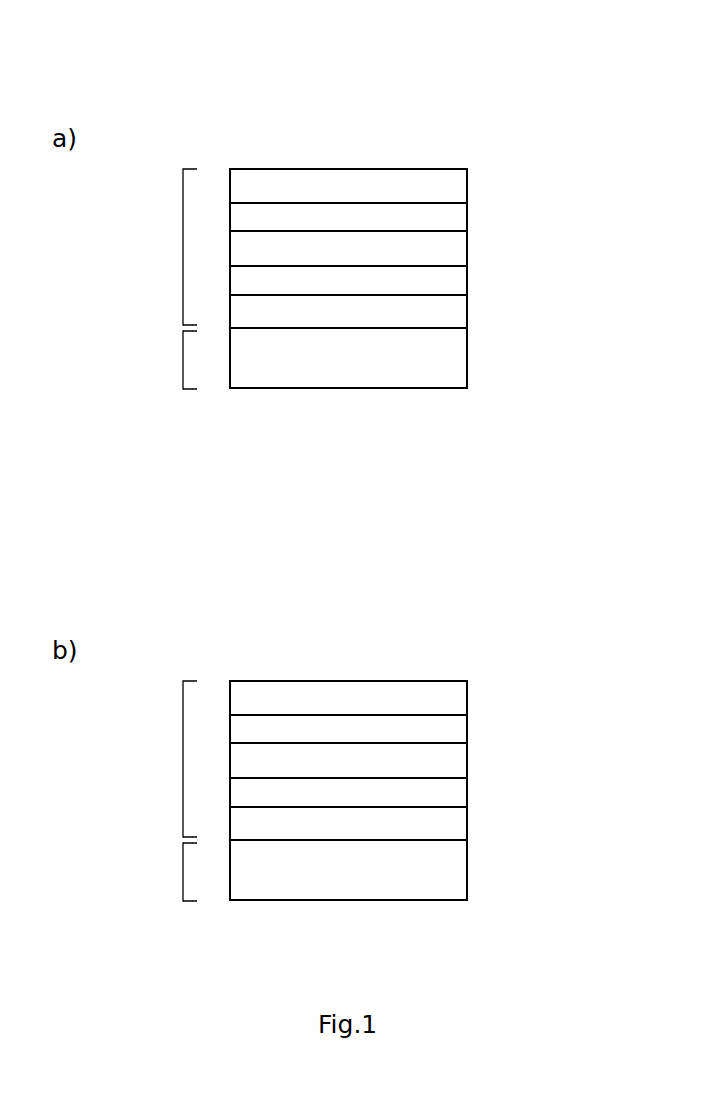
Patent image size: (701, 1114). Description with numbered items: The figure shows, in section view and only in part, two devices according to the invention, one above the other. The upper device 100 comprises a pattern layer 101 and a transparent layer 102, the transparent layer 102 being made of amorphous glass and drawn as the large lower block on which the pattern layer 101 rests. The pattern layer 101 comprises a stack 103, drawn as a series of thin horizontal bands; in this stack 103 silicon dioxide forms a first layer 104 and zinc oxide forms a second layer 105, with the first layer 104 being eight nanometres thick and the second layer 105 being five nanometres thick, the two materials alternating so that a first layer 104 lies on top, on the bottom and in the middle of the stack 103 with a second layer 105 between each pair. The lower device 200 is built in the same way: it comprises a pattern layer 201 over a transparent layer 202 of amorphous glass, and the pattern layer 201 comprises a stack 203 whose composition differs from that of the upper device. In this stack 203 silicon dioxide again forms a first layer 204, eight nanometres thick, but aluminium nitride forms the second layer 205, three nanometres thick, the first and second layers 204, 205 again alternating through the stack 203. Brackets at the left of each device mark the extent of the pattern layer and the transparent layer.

The device 100 is at (227, 120).
The pattern layer 101 is at (183, 250).
The transparent layer 102 is at (183, 357).
The stack 103 is at (507, 80).
The first layer 104 is at (467, 169).
The second layer 105 is at (467, 217).
The device 200 is at (227, 632).
The pattern layer 201 is at (183, 762).
The transparent layer 202 is at (183, 869).
The stack 203 is at (507, 592).
The first layer 204 is at (467, 681).
The second layer 205 is at (467, 727).